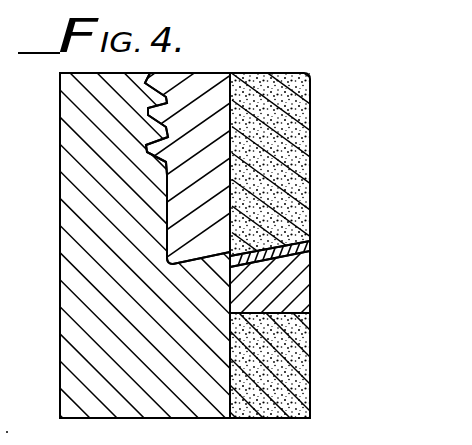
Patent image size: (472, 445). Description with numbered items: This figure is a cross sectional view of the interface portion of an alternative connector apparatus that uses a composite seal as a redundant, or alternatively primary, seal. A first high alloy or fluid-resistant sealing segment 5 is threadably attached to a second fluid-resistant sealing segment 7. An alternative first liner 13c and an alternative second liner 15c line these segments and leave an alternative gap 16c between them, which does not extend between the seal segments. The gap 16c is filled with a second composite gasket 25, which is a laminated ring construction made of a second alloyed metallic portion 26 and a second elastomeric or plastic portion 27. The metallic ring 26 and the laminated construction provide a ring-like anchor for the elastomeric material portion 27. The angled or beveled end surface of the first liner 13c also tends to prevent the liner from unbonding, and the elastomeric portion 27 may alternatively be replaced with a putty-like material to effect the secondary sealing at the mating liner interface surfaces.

The first high alloy or fluid-resistant sealing segment 5 is at (218, 82).
The second fluid-resistant sealing segment 7 is at (62, 278).
The first liner 13c is at (312, 157).
The second liner 15c is at (309, 375).
The gap 16c is at (313, 246).
The second composite gasket 25 is at (229, 293).
The second alloyed metallic portion 26 is at (303, 298).
The second elastomeric or plastic portion 27 is at (308, 237).